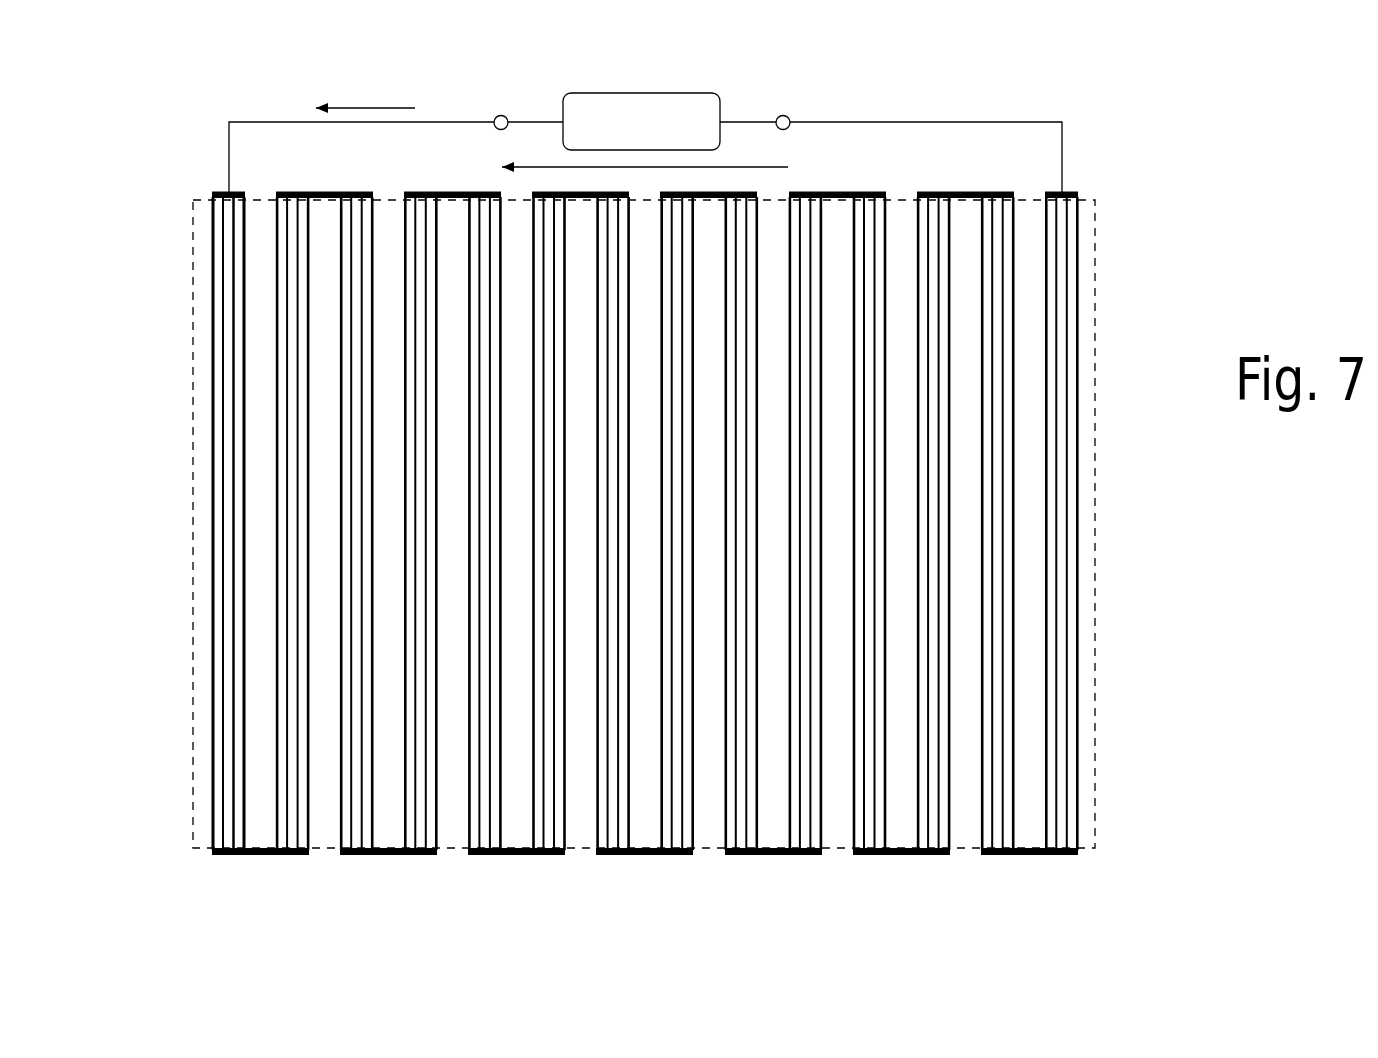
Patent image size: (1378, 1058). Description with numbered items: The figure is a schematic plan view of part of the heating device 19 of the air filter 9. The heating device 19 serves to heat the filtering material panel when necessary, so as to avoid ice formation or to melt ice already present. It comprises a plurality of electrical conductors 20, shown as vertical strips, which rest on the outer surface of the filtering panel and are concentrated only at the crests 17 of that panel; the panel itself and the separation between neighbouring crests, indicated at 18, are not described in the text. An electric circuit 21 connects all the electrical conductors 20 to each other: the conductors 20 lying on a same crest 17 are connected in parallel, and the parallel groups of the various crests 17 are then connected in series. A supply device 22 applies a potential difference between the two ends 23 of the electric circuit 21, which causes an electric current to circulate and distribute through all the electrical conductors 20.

The air filter 9 is at (1222, 642).
The crest 17 is at (228, 861).
The connecting portion 18 is at (262, 861).
The heating device 19 is at (1192, 93).
The electrical conductor 20 is at (221, 443).
The electric circuit 21 is at (172, 108).
The supply device 22 is at (641, 121).
The end 23 is at (501, 115).